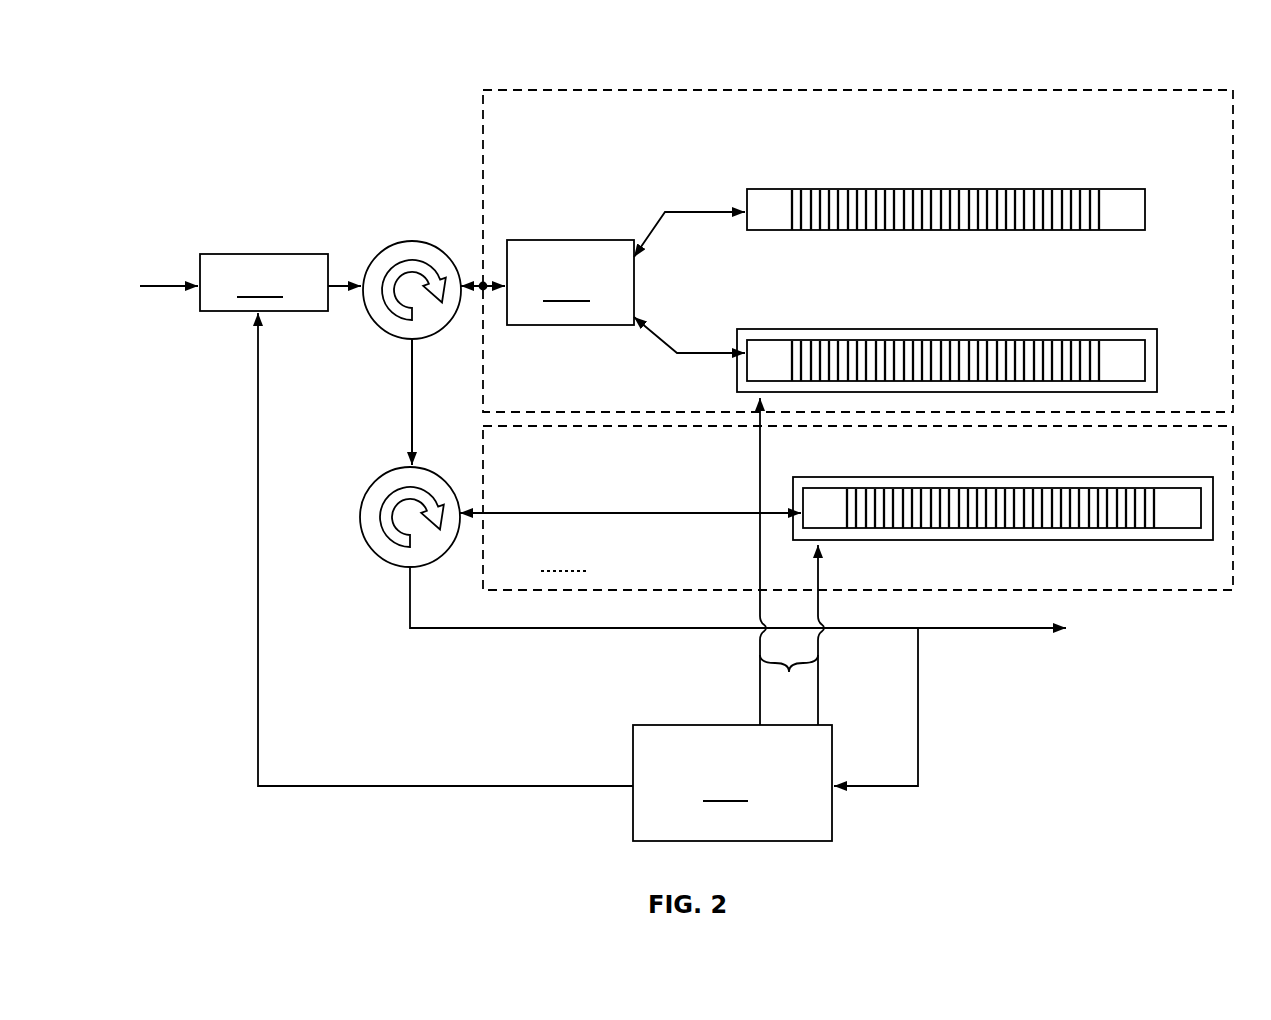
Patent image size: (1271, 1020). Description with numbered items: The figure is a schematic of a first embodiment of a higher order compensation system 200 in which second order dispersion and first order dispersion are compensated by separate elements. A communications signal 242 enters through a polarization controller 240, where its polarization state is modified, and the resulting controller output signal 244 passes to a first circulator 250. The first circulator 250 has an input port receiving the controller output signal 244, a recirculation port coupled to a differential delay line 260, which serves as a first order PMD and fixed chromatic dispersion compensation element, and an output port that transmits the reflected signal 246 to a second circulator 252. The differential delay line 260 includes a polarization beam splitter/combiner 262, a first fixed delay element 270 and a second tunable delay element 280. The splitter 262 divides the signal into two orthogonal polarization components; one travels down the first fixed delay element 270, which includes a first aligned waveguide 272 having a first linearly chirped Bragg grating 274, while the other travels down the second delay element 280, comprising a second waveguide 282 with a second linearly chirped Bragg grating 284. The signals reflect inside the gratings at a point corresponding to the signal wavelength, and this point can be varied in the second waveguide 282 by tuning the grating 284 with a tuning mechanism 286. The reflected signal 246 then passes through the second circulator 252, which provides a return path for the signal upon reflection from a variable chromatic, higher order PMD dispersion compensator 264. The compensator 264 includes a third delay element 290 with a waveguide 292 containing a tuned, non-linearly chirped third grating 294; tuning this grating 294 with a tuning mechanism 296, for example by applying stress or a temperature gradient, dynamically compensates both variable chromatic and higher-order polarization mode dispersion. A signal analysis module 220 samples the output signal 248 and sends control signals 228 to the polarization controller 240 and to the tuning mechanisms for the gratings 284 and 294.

The higher order compensation system 200 is at (250, 82).
The signal analysis module 220 is at (775, 734).
The control signals 228 is at (428, 785).
The polarization controller 240 is at (264, 282).
The communications signal 242 is at (157, 285).
The controller output signal 244 is at (332, 280).
The reflected signal 246 is at (407, 390).
The output signal 248 is at (1016, 632).
The first circulator 250 is at (410, 240).
The second circulator 252 is at (375, 487).
The differential delay line 260 is at (1012, 88).
The polarization beam splitter/combiner 262 is at (570, 282).
The variable chromatic, higher order PMD dispersion compensator 264 is at (858, 508).
The first fixed delay element 270 is at (859, 155).
The first aligned waveguide 272 is at (1118, 200).
The first linearly chirped Bragg grating 274 is at (905, 205).
The second tunable delay element 280 is at (874, 296).
The second waveguide 282 is at (1118, 350).
The second linearly chirped Bragg grating 284 is at (925, 350).
The tuning mechanism 286 is at (1035, 332).
The third delay element 290 is at (846, 466).
The waveguide 292 is at (1178, 497).
The third grating 294 is at (907, 497).
The tuning mechanism 296 is at (1022, 477).